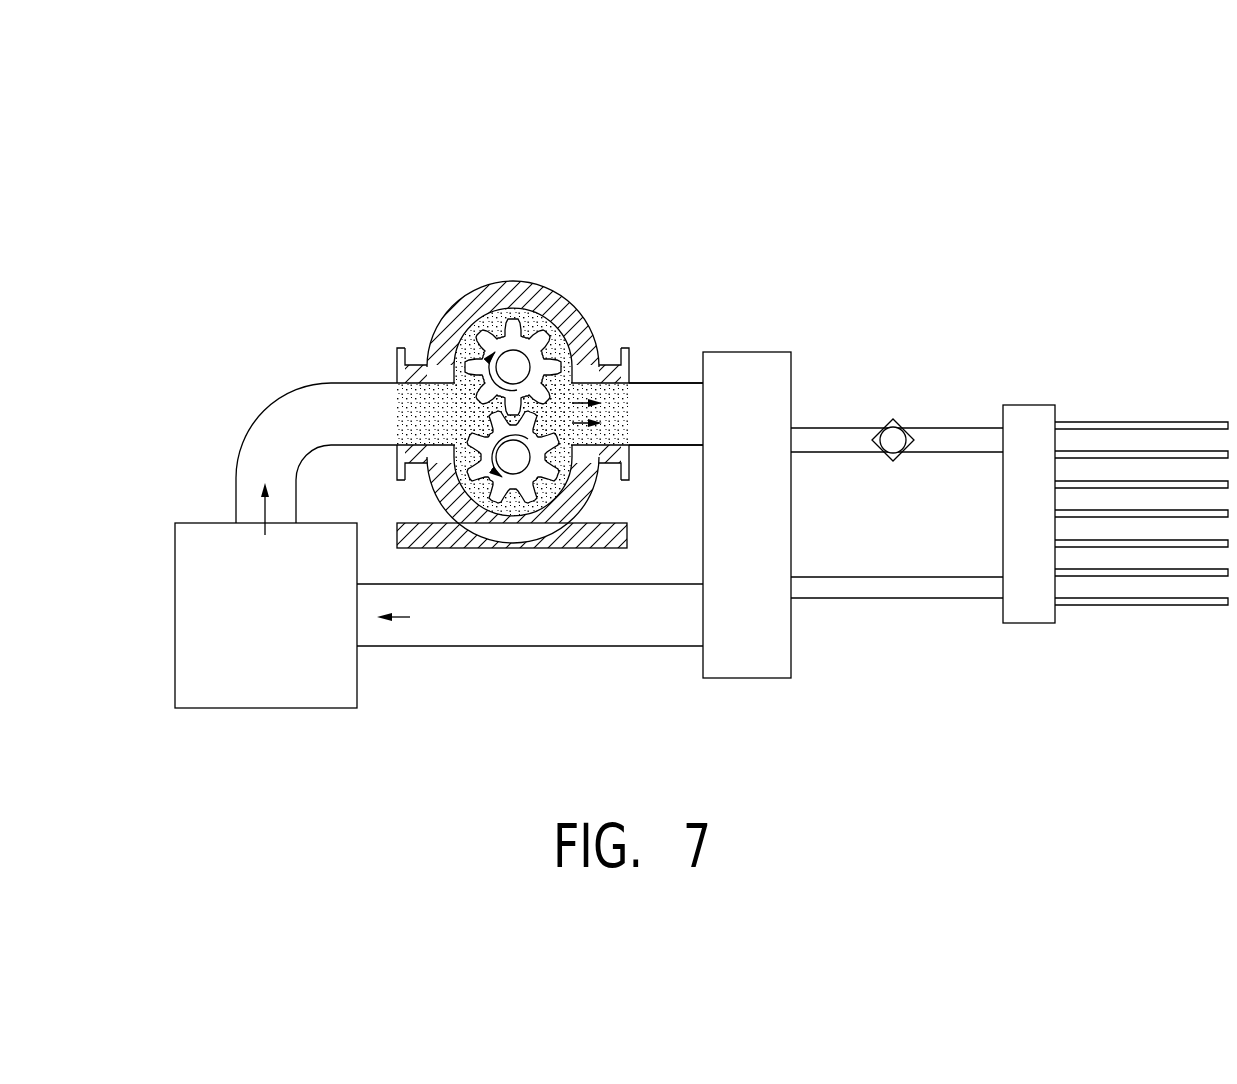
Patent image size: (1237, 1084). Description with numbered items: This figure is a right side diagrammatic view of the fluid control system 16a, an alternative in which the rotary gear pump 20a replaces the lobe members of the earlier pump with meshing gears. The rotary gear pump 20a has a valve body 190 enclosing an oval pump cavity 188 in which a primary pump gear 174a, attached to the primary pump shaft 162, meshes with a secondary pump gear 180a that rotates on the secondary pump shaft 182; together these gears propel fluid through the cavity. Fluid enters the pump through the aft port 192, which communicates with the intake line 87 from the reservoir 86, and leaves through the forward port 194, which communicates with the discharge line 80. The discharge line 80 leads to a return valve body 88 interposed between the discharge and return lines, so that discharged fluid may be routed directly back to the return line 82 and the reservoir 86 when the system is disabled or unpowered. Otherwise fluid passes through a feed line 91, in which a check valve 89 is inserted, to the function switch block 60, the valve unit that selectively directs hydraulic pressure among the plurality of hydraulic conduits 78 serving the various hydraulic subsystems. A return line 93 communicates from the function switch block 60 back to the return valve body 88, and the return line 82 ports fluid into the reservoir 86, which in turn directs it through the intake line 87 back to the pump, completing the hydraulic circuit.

The fluid control system 16a is at (682, 195).
The rotary gear pump 20a is at (533, 277).
The secondary pump gear 180a is at (531, 327).
The secondary pump shaft 182 is at (513, 367).
The valve body 190 is at (578, 310).
The aft port 192 is at (402, 388).
The forward port 194 is at (633, 388).
The discharge line 80 is at (678, 383).
The return valve body 88 is at (777, 350).
The intake line 87 is at (288, 390).
The oval pump cavity 188 is at (463, 467).
The primary pump shaft 162 is at (515, 462).
The primary pump gear 174a is at (528, 482).
The return line 82 is at (545, 647).
The reservoir 86 is at (323, 708).
The check valve 89 is at (907, 408).
The feed line 91 is at (928, 427).
The function switch block 60 is at (1023, 405).
The return line 93 is at (888, 598).
The hydraulic conduits 78 is at (1138, 627).